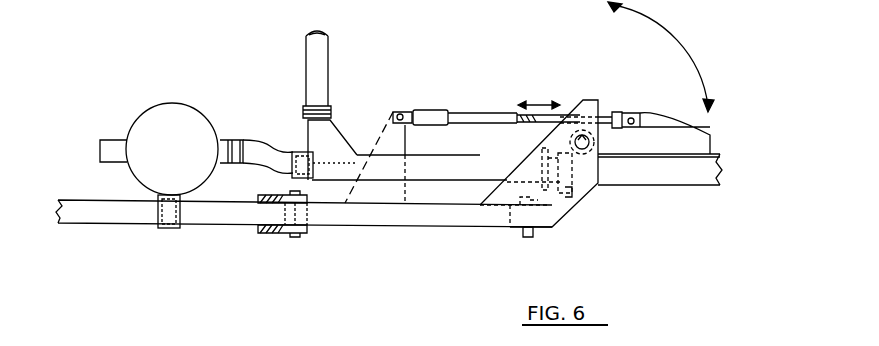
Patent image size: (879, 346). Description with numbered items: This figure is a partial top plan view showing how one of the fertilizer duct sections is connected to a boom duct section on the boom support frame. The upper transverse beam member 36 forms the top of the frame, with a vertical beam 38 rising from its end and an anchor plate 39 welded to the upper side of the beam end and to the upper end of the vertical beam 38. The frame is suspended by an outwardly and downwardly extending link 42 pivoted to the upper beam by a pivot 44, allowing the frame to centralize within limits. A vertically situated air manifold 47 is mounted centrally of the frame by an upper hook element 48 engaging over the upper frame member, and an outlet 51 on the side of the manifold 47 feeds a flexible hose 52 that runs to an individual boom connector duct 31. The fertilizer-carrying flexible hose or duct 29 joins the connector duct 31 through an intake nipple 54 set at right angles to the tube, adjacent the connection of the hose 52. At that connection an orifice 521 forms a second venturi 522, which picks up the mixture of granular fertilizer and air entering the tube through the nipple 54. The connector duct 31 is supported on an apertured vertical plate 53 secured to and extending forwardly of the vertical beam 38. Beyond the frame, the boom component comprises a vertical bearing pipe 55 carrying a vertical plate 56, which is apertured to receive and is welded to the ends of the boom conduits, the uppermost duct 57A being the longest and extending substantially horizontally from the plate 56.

The flexible hose or duct 29 is at (320, 67).
The boom connector duct 31 is at (451, 170).
The upper transverse beam member 36 is at (84, 208).
The vertical beam 38 is at (542, 218).
The anchor plate 39 is at (562, 207).
The link 42 is at (275, 191).
The pivot 44 is at (295, 234).
The air manifold 47 is at (141, 128).
The upper hook element 48 is at (172, 230).
The outlet 51 is at (112, 152).
The flexible hose 52 is at (258, 150).
The orifice 521 is at (305, 150).
The second venturi 522 is at (357, 140).
The apertured vertical plate 53 is at (540, 164).
The intake nipple 54 is at (330, 128).
The vertical bearing pipe 55 is at (595, 142).
The vertical plate 56 is at (571, 189).
The uppermost duct 57A is at (695, 178).